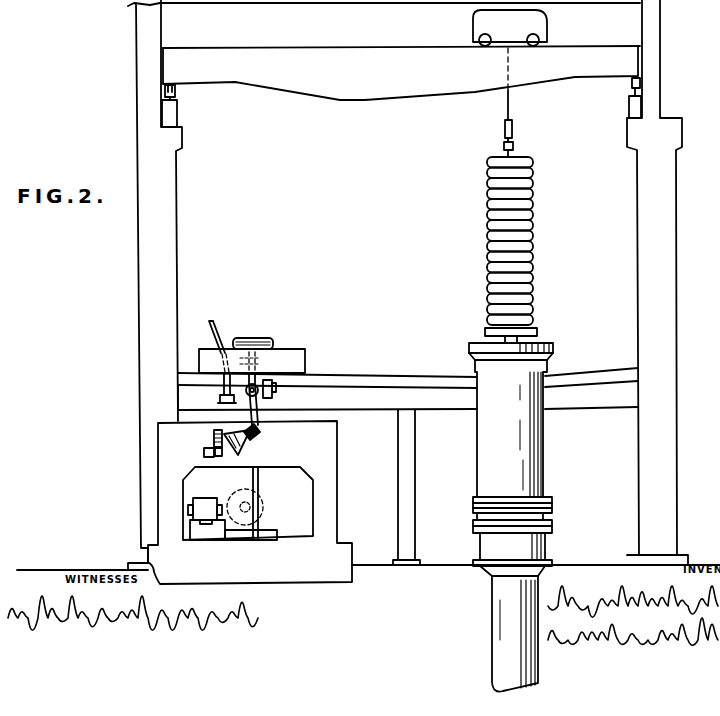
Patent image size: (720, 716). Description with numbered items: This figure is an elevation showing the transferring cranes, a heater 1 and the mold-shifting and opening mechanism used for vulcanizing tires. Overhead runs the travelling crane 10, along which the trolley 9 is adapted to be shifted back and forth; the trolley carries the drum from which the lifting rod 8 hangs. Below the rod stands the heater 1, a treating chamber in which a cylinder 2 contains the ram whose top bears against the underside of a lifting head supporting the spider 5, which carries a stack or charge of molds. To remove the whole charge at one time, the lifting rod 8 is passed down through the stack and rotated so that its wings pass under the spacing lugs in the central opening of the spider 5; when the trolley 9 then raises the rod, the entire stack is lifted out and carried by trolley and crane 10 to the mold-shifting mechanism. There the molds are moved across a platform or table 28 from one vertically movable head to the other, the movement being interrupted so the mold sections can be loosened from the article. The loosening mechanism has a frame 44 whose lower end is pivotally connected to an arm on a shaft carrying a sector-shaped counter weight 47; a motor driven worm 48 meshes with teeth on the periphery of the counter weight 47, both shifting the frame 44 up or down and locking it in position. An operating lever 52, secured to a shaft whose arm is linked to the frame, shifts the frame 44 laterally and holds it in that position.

The mold cylinder 1 is at (530, 443).
The cylinder 2 is at (493, 600).
The spider 5 is at (540, 332).
The lifting rod 8 is at (514, 152).
The trolley 9 is at (476, 24).
The travelling crane 10 is at (408, 86).
The platform or table 28 is at (302, 357).
The frame 44 is at (258, 413).
The counter weight 47 is at (247, 442).
The motor driven worm 48 is at (212, 437).
The operating lever 52 is at (222, 348).